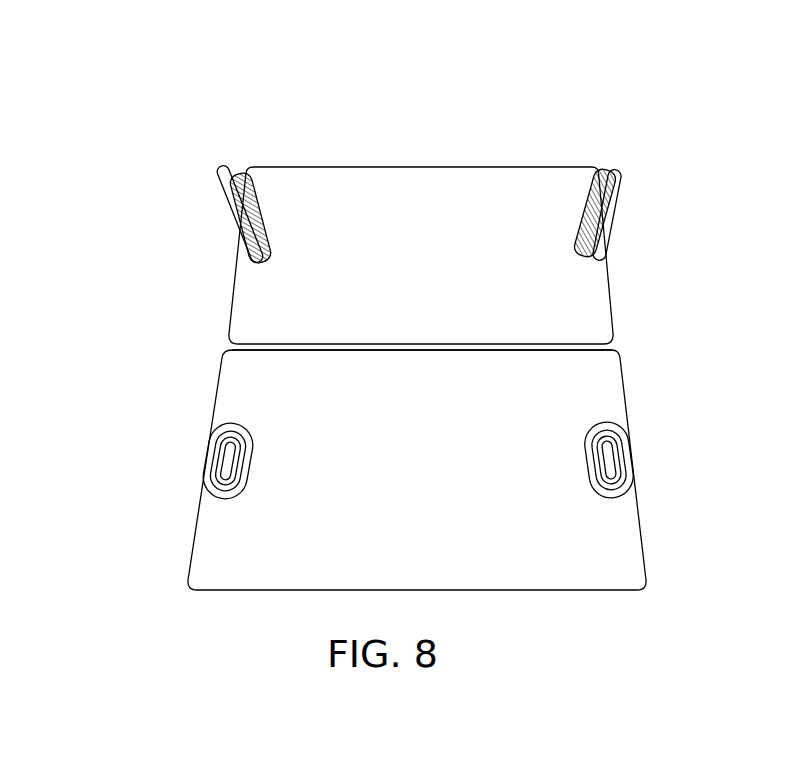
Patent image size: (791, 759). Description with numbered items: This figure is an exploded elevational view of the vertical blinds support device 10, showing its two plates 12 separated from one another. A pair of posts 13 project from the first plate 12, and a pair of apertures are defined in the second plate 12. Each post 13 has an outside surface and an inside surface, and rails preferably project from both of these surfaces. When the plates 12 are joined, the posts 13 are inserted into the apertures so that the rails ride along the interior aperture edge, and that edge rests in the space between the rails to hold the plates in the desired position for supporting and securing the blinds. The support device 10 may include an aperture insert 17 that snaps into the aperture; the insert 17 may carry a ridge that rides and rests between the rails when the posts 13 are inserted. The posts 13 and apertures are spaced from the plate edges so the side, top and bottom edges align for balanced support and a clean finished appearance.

The vertical blinds support device 10 is at (144, 98).
The plate 12 is at (407, 185).
The post 13 is at (591, 214).
The aperture insert 17 is at (631, 449).